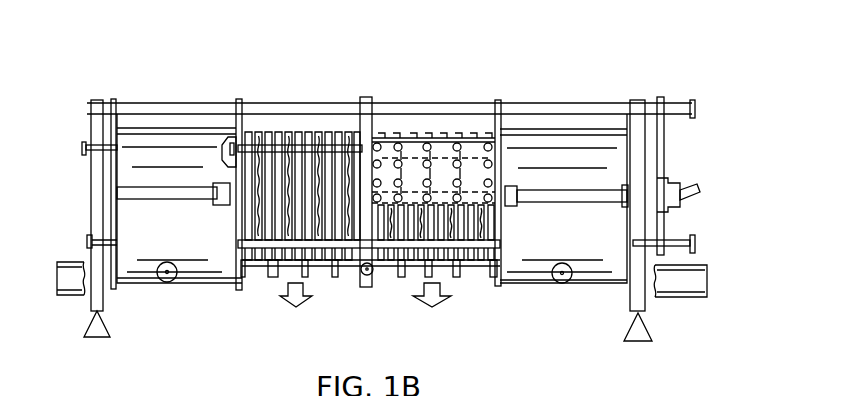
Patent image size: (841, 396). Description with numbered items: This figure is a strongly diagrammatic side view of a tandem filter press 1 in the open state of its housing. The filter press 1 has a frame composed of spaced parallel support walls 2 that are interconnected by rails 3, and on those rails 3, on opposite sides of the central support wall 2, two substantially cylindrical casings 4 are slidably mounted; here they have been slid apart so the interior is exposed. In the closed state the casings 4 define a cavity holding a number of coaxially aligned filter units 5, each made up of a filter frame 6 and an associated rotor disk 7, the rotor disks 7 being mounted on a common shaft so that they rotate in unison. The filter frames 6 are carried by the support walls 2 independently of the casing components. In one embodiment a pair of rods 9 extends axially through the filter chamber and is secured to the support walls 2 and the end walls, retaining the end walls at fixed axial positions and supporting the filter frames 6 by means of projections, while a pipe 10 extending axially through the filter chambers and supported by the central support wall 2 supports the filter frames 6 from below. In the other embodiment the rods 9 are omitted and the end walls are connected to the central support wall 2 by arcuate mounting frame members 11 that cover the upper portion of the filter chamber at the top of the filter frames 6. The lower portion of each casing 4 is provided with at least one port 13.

The filter press 1 is at (450, 96).
The support wall 2 is at (100, 93).
The rail 3 is at (531, 108).
The casing 4 is at (166, 130).
The filter unit 5 is at (328, 124).
The filter frame 6 is at (272, 266).
The rotor disk 7 is at (263, 222).
The rod 9 is at (84, 146).
The pipe 10 is at (325, 268).
The mounting frame member 11 is at (415, 152).
The port 13 is at (167, 283).